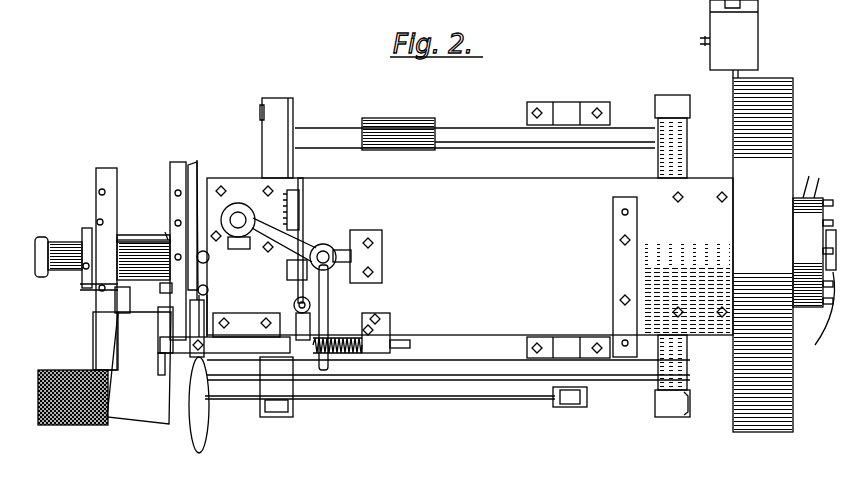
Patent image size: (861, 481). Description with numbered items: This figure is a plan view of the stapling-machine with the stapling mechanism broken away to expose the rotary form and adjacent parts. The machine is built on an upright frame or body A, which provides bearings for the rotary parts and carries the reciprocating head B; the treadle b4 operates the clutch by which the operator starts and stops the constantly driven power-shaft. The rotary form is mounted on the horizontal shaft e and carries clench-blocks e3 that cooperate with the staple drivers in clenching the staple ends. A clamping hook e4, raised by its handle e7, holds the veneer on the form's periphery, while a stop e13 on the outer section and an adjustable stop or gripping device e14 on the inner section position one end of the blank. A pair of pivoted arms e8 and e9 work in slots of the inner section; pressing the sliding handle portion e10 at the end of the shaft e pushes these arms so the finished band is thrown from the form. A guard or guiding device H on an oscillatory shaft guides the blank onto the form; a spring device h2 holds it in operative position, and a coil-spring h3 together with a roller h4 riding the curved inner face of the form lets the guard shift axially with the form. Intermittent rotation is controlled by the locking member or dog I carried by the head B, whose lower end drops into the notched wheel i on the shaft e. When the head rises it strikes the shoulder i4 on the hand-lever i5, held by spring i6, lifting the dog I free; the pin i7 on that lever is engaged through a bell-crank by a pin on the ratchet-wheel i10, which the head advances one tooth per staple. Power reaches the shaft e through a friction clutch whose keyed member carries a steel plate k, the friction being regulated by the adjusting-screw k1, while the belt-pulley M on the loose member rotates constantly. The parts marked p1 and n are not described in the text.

The upright frame or body A is at (470, 279).
The guard or guiding device H is at (283, 118).
The belt-pulley M is at (775, 85).
The reciprocating head B is at (305, 242).
The locking member or dog I is at (337, 253).
The shaft e is at (142, 212).
The clench-blocks e3 is at (82, 288).
The hook e4 is at (88, 265).
The handle e7 is at (80, 262).
The pivoted arm e8 is at (168, 228).
The pivoted arm e9 is at (165, 288).
The sliding handle portion e10 is at (60, 250).
The stop e13 is at (112, 240).
The stop or gripping device e14 is at (190, 166).
The notched wheel or disk i is at (826, 195).
The shoulder i4 is at (334, 250).
The hand-lever i5 is at (323, 372).
The spring i6 is at (322, 244).
The pin i7 is at (295, 305).
The rotary ratchet-wheel i10 is at (240, 238).
The steel plate k is at (190, 446).
The adjusting-screw k1 is at (832, 250).
The hook p1 is at (203, 250).
The spring device h2 is at (298, 312).
The coil-spring h3 is at (355, 354).
The roller h4 is at (208, 290).
The bar n is at (406, 340).
The treadle b4 is at (243, 400).